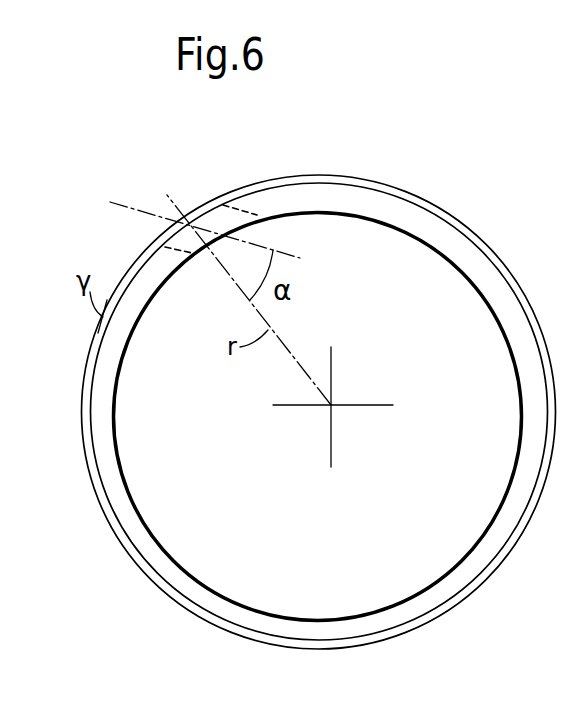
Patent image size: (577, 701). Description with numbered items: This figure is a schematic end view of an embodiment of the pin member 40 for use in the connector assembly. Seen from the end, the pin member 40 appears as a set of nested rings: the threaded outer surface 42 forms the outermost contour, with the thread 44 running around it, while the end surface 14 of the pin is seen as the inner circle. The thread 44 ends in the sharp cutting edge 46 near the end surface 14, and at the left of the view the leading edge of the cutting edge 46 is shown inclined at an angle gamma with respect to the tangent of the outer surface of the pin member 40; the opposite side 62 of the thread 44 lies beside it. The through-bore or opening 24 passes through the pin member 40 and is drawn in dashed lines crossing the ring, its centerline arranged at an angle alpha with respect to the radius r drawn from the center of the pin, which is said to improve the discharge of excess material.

The pin member 40 is at (415, 119).
The threaded outer surface 42 is at (397, 187).
The thread 44 is at (490, 250).
The end surface 14 is at (155, 552).
The opposite side of the thread 62 is at (132, 270).
The through-bore 24 is at (233, 220).
The sharp cutting edge 46 is at (93, 330).